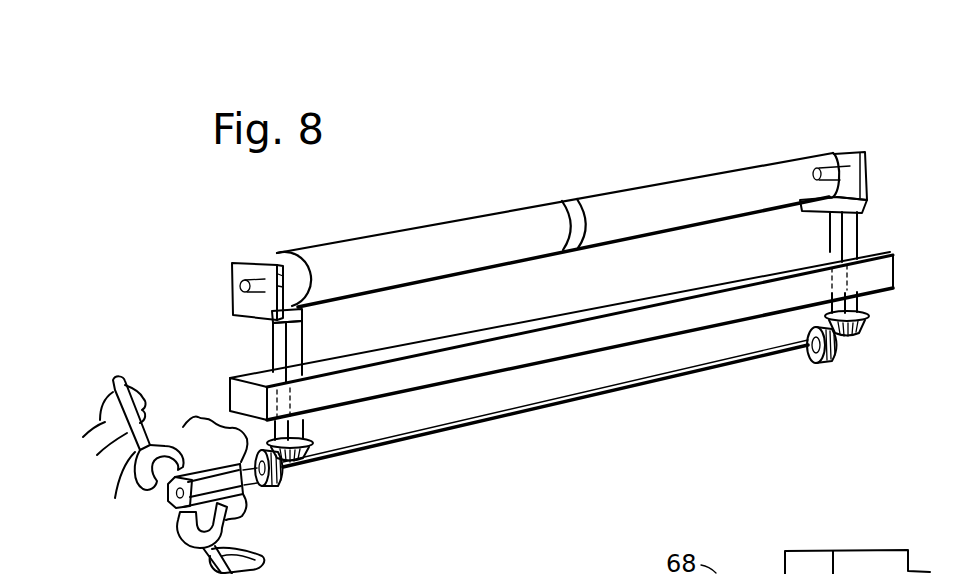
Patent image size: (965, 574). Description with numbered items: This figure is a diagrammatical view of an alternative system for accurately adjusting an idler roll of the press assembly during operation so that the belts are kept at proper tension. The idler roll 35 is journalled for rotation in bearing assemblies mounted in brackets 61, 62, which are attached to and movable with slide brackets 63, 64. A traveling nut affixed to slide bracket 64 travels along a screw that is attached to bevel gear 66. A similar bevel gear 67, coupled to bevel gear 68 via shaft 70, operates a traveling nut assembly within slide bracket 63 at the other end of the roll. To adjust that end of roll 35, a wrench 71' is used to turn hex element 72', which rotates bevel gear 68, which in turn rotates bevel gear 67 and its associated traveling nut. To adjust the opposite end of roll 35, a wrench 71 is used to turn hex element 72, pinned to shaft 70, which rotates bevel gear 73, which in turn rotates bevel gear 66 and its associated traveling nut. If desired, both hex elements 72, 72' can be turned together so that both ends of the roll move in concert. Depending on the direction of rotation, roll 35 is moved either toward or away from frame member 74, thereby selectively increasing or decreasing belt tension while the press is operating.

The idler roll 35 is at (467, 227).
The bracket 61 is at (238, 263).
The bracket 62 is at (840, 150).
The slide bracket 63 is at (302, 347).
The slide bracket 64 is at (833, 233).
The bevel gear 66 is at (857, 333).
The bevel gear 67 is at (313, 443).
The bevel gear 68 is at (270, 492).
The shaft 70 is at (522, 420).
The wrench 71 is at (120, 456).
The wrench 71' is at (248, 538).
The hex element 72 is at (192, 404).
The hex element 72' is at (215, 429).
The bevel gear 73 is at (827, 363).
The frame member 74 is at (568, 317).